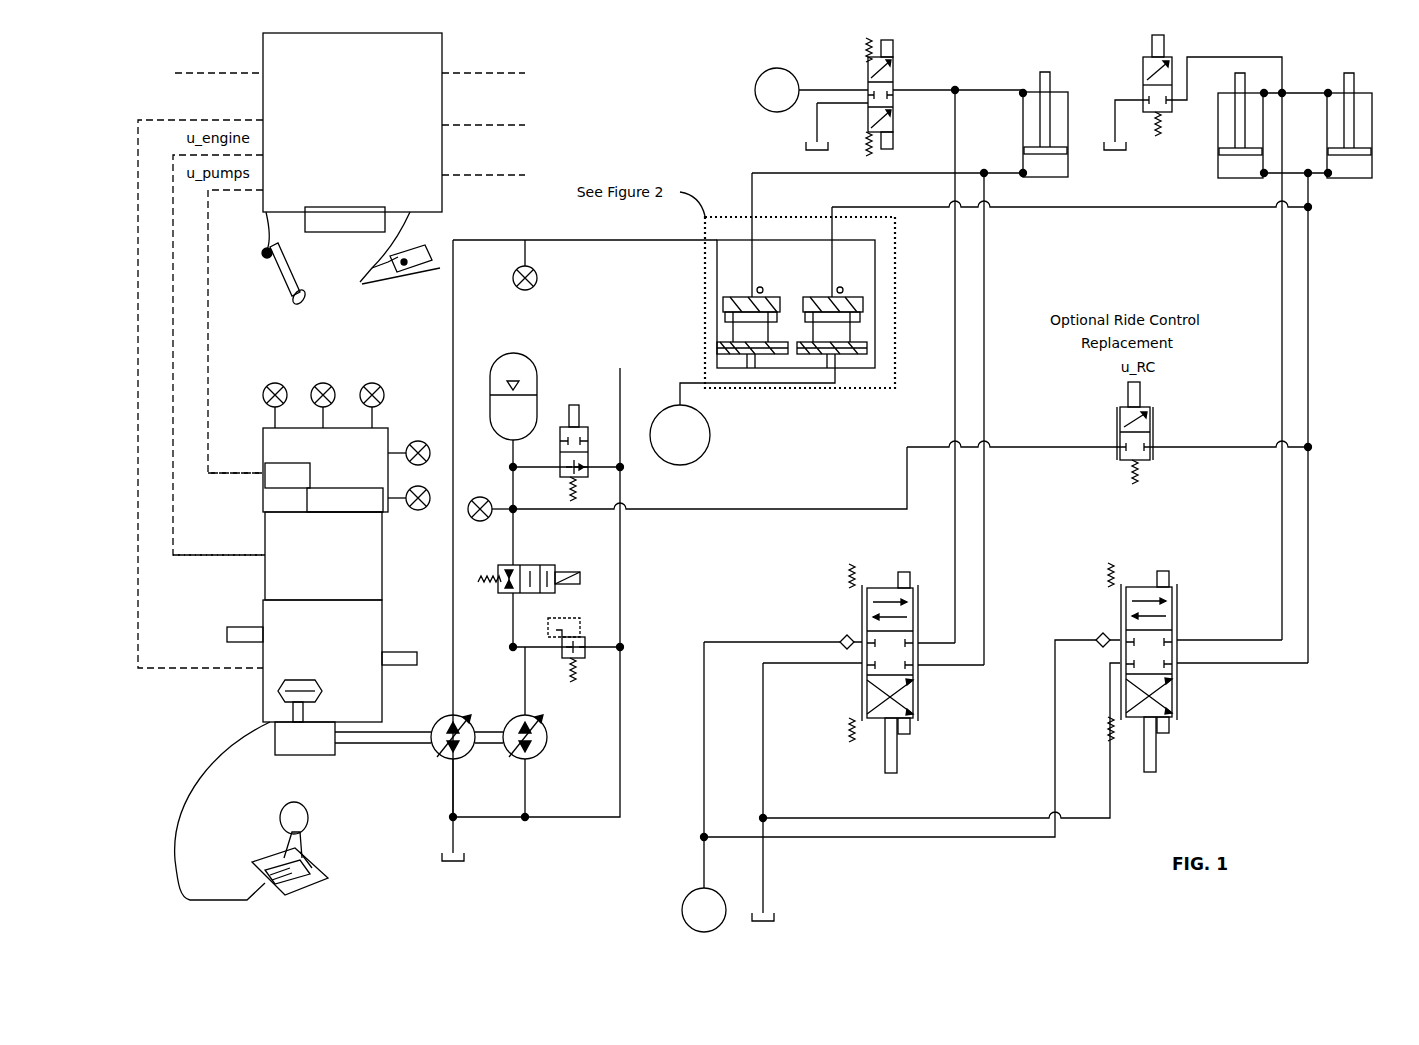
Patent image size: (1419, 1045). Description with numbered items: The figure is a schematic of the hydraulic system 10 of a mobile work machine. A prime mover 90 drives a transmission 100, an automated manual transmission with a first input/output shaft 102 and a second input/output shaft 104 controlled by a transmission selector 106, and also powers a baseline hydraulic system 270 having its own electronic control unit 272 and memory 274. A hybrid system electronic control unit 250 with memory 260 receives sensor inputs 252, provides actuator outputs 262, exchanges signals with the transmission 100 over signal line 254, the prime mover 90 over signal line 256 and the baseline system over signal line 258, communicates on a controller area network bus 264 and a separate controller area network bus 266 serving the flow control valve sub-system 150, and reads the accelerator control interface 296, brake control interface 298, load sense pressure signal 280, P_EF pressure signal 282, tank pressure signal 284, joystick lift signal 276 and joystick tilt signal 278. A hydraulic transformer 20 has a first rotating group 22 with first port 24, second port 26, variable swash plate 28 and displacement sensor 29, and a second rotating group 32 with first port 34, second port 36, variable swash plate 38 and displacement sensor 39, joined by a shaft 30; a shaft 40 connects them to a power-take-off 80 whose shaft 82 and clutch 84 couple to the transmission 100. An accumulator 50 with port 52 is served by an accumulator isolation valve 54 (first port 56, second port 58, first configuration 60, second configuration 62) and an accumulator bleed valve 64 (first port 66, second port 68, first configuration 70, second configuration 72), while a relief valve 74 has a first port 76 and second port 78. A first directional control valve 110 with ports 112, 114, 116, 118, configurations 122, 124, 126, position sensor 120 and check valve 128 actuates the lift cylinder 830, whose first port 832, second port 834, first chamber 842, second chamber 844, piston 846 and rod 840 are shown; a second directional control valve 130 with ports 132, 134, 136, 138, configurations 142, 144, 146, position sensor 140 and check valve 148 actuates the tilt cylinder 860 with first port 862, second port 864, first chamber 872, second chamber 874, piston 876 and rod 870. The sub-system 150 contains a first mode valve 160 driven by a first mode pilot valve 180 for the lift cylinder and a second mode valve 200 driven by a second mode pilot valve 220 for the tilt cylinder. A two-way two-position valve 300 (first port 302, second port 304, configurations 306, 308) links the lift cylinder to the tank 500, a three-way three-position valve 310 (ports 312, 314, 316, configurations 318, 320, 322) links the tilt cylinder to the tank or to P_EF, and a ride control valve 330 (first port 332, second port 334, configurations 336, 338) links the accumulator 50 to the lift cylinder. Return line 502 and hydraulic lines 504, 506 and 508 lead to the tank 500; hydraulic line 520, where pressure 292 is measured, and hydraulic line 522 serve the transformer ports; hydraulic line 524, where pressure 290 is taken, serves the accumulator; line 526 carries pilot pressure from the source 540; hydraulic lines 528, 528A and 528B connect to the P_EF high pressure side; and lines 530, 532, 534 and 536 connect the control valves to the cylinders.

The hydraulic system 10 is at (911, 860).
The hydraulic transformer 20 is at (560, 736).
The first rotating group 22 is at (540, 748).
The first port 24 is at (528, 720).
The second port 26 is at (530, 765).
The variable swash plate 28 is at (548, 722).
The displacement sensor 29 is at (500, 770).
The shaft 30 is at (493, 737).
The second rotating group 32 is at (432, 728).
The first port 34 is at (455, 720).
The second port 36 is at (462, 775).
The variable swash plate 38 is at (435, 752).
The displacement sensor 39 is at (447, 770).
The shaft 40 is at (370, 745).
The accumulator 50 is at (513, 396).
The port 52 is at (510, 442).
The accumulator isolation valve 54 is at (525, 563).
The first port 56 is at (500, 568).
The second port 58 is at (510, 593).
The first configuration 60 is at (492, 588).
The second configuration 62 is at (560, 572).
The accumulator bleed valve 64 is at (560, 472).
The first port 66 is at (560, 465).
The second port 68 is at (588, 460).
The first configuration 70 is at (588, 478).
The second configuration 72 is at (586, 432).
The relief valve 74 is at (585, 660).
The first port 76 is at (558, 632).
The second port 78 is at (583, 640).
The power-take-off 80 is at (265, 740).
The shaft 82 is at (292, 712).
The clutch 84 is at (278, 692).
The prime mover 90 is at (375, 550).
The transmission 100 is at (322, 661).
The first input/output shaft 102 is at (400, 658).
The second input/output shaft 104 is at (242, 632).
The transmission selector 106 is at (308, 850).
The first directional control valve 110 is at (1178, 605).
The first port 112 is at (1120, 640).
The second port 114 is at (1118, 665).
The third port 116 is at (1178, 640).
The fourth port 118 is at (1180, 665).
The position sensor 120 is at (1156, 760).
The first configuration 122 is at (1170, 655).
The second configuration 124 is at (1120, 605).
The third configuration 126 is at (1175, 708).
The check valve 128 is at (1098, 638).
The second directional control valve 130 is at (913, 592).
The first port 132 is at (862, 630).
The second port 134 is at (862, 668).
The third port 136 is at (916, 640).
The fourth port 138 is at (920, 665).
The position sensor 140 is at (884, 755).
The first configuration 142 is at (908, 655).
The second configuration 144 is at (905, 610).
The third configuration 146 is at (868, 708).
The check valve 148 is at (840, 643).
The flow control valve sub-system 150 is at (690, 300).
The first mode valve 160 is at (852, 297).
The first mode pilot valve 180 is at (845, 360).
The second mode valve 200 is at (735, 297).
The second mode pilot valve 220 is at (742, 358).
The hybrid system electronic control unit 250 is at (352, 122).
The sensor inputs 252 is at (176, 72).
The signal line 254 is at (178, 119).
The signal line 256 is at (230, 558).
The signal line 258 is at (242, 476).
The memory 260 is at (349, 232).
The actuator outputs 262 is at (520, 75).
The controller area network bus 264 is at (520, 127).
The controller area network bus 266 is at (495, 178).
The baseline hydraulic system 270 is at (272, 503).
The electronic control unit 272 is at (282, 462).
The memory 274 is at (380, 490).
The joystick lift signal 276 is at (430, 445).
The joystick tilt signal 278 is at (430, 510).
The load sense pressure signal 280 is at (266, 386).
The non-priority circuit P_EF pressure signal 282 is at (366, 383).
The tank pressure signal 284 is at (320, 383).
The pressure 290 is at (478, 521).
The pressure 292 is at (538, 278).
The accelerator control interface 296 is at (362, 282).
The brake control interface 298 is at (266, 252).
The two-way two-position valve 300 is at (1165, 57).
The first port 302 is at (1175, 100).
The second port 304 is at (1145, 100).
The first configuration 306 is at (1168, 112).
The second configuration 308 is at (1145, 72).
The three-way three-position valve 310 is at (870, 68).
The first port 312 is at (897, 90).
The second port 314 is at (866, 88).
The third port 316 is at (868, 105).
The first configuration 318 is at (897, 100).
The second configuration 320 is at (898, 62).
The third configuration 322 is at (893, 122).
The ride control valve 330 is at (1118, 425).
The first port 332 is at (1153, 447).
The second port 334 is at (1117, 443).
The first configuration 336 is at (1150, 418).
The second configuration 338 is at (1117, 455).
The tank 500 is at (443, 855).
The return line 502 is at (622, 620).
The hydraulic line 504 is at (955, 818).
The hydraulic line 506 is at (1110, 103).
The hydraulic line 508 is at (815, 110).
The hydraulic line 520 is at (453, 360).
The hydraulic line 522 is at (512, 630).
The hydraulic line 524 is at (650, 512).
The line 526 is at (679, 400).
The hydraulic line 528 is at (792, 58).
The hydraulic line 528A is at (735, 640).
The hydraulic line 528B is at (780, 68).
The line 530 is at (780, 174).
The line 532 is at (915, 207).
The hydraulic line 534 is at (955, 388).
The hydraulic line 536 is at (1282, 535).
The source of pilot hydraulic fluid pressure 540 is at (706, 452).
The lift cylinder 830 is at (1245, 176).
The first port 832 is at (1327, 172).
The second port 834 is at (1327, 98).
The rod 840 is at (1345, 78).
The first chamber 842 is at (1258, 176).
The second chamber 844 is at (1222, 100).
The piston 846 is at (1372, 152).
The tilt cylinder 860 is at (1068, 130).
The first port 862 is at (1022, 172).
The second port 864 is at (1022, 93).
The rod 870 is at (1041, 74).
The first chamber 872 is at (1047, 165).
The second chamber 874 is at (1066, 112).
The piston 876 is at (1028, 150).